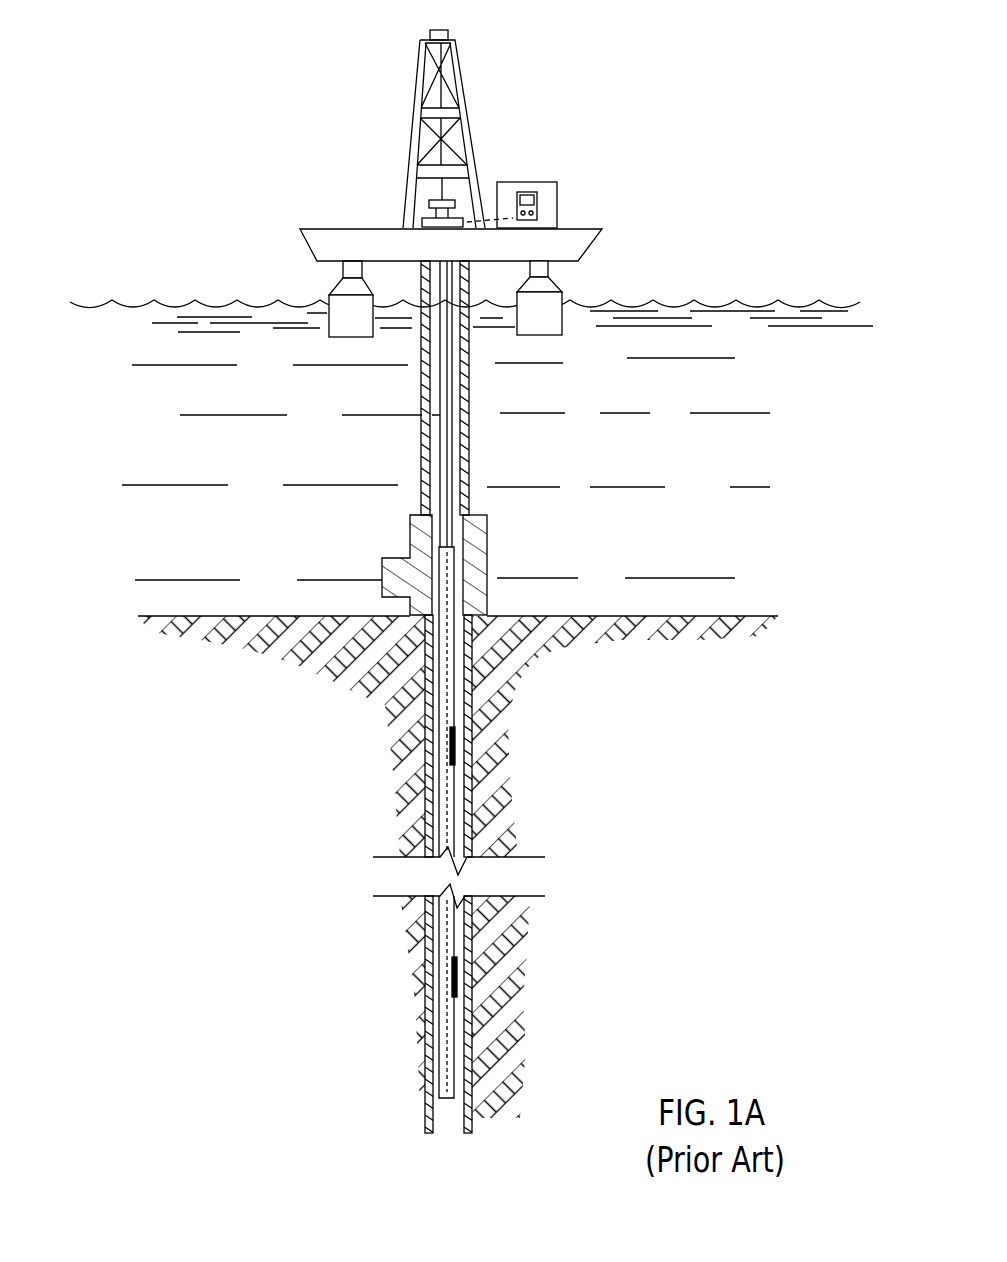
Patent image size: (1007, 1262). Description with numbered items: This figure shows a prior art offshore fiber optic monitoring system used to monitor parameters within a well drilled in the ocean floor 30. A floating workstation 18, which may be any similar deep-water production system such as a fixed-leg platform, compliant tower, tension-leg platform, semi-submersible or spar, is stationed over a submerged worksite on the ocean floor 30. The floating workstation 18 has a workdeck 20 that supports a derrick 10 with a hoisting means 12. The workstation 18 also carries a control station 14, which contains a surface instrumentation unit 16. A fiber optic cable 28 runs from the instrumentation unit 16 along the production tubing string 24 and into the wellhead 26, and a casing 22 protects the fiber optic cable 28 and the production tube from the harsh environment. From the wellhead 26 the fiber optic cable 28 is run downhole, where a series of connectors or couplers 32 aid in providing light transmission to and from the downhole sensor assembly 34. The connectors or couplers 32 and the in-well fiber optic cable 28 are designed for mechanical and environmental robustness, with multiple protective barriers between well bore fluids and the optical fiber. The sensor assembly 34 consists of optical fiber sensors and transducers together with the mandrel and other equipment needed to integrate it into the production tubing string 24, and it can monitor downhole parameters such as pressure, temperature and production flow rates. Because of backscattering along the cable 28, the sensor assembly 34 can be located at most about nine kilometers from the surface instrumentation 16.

The derrick 10 is at (460, 58).
The hoisting means 12 is at (432, 210).
The control station 14 is at (547, 185).
The surface instrumentation unit 16 is at (537, 207).
The floating workstation 18 is at (555, 302).
The workdeck 20 is at (315, 238).
The casing 22 is at (425, 405).
The production tubing string 24 is at (460, 679).
The wellhead 26 is at (382, 558).
The fiber optic cable 28 is at (450, 432).
The ocean floor 30 is at (637, 615).
The connectors or couplers 32 is at (455, 752).
The downhole sensor assembly 34 is at (457, 973).